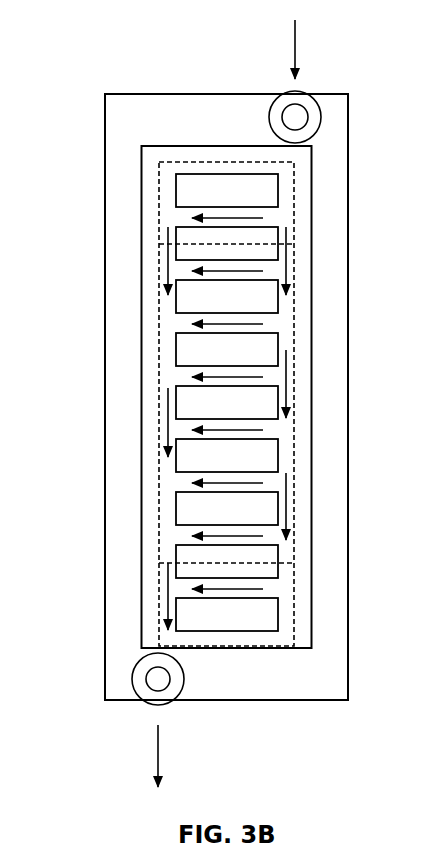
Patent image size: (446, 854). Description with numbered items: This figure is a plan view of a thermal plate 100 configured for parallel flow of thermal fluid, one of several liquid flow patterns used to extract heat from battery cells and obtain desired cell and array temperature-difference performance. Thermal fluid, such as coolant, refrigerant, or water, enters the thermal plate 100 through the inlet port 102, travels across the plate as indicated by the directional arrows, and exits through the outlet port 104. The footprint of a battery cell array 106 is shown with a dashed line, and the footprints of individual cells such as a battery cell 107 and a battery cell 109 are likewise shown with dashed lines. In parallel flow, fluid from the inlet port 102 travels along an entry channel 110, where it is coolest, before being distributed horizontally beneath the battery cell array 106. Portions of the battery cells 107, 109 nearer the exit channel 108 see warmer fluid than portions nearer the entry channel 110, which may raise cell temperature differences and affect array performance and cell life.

The thermal plate 100 is at (111, 84).
The inlet port 102 is at (313, 99).
The outlet port 104 is at (147, 680).
The battery cell array 106 is at (294, 306).
The battery cell 107 is at (294, 204).
The exit channel 108 is at (156, 317).
The battery cell 109 is at (295, 590).
The entry channel 110 is at (306, 358).